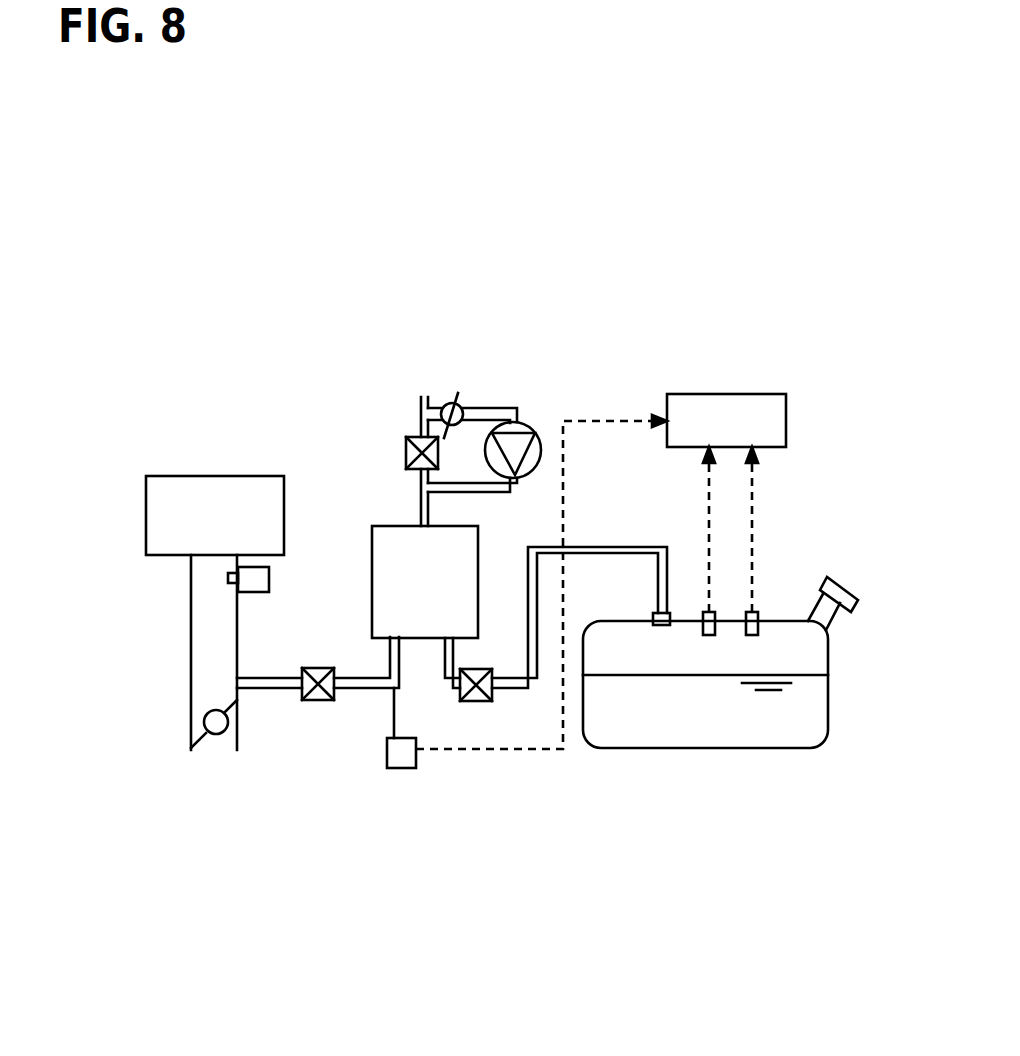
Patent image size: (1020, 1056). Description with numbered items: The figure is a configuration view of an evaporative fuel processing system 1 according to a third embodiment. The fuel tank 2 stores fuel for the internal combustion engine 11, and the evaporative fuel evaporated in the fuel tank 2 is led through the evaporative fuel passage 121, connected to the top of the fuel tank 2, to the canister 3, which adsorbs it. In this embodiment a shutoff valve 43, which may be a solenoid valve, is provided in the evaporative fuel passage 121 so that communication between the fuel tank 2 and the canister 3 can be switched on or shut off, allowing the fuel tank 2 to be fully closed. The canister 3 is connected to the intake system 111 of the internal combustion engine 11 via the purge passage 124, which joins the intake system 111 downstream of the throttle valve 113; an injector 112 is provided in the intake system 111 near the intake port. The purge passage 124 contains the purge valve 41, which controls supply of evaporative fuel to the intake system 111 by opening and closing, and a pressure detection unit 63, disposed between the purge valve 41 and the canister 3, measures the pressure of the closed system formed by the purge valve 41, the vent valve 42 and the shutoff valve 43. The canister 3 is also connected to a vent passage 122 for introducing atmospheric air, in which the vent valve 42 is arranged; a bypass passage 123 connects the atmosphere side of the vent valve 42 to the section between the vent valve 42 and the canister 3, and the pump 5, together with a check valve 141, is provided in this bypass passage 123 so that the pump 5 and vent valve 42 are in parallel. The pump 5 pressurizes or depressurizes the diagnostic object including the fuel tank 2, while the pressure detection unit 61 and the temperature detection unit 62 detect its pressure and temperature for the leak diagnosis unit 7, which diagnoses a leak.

The evaporative fuel processing system 1 is at (323, 800).
The fuel tank 2 is at (704, 730).
The canister 3 is at (388, 533).
The pump 5 is at (533, 435).
The leak diagnosis unit 7 is at (725, 415).
The internal combustion engine 11 is at (182, 512).
The purge valve 41 is at (313, 700).
The vent valve 42 is at (408, 440).
The shutoff valve 43 is at (480, 702).
The pressure detection unit 61 is at (713, 612).
The temperature detection unit 62 is at (757, 612).
The pressure detection unit 63 is at (405, 760).
The intake system 111 is at (205, 613).
The injector 112 is at (258, 577).
The throttle valve 113 is at (205, 738).
The evaporative fuel passage 121 is at (515, 683).
The vent passage 122 is at (420, 432).
The bypass passage 123 is at (485, 413).
The purge passage 124 is at (372, 682).
The check valve 141 is at (448, 404).